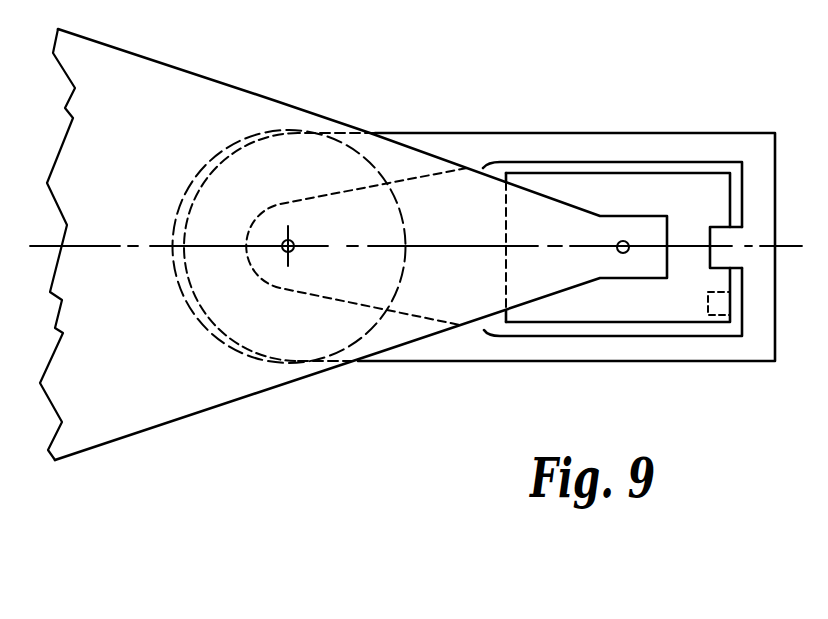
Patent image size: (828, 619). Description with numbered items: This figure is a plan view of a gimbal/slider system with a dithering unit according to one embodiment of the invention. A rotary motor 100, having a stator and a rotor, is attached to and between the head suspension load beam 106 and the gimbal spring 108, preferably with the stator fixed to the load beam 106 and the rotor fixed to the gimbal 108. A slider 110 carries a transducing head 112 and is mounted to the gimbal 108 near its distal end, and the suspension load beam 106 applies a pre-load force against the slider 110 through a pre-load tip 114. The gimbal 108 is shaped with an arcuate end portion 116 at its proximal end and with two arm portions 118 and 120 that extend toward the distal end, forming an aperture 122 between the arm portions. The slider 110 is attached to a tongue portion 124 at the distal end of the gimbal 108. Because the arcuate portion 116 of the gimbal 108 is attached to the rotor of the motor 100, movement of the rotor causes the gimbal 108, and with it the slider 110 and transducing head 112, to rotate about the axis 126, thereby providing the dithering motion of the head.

The rotary motor 100 is at (183, 297).
The head suspension load beam 106 is at (96, 41).
The gimbal spring 108 is at (650, 132).
The slider 110 is at (583, 323).
The transducing head 112 is at (713, 327).
The pre-load tip 114 is at (622, 241).
The arcuate end portion 116 is at (197, 175).
The arm portion 118 is at (523, 138).
The arm portion 120 is at (513, 350).
The aperture 122 is at (493, 168).
The tongue portion 124 is at (708, 253).
The axis 126 is at (294, 251).